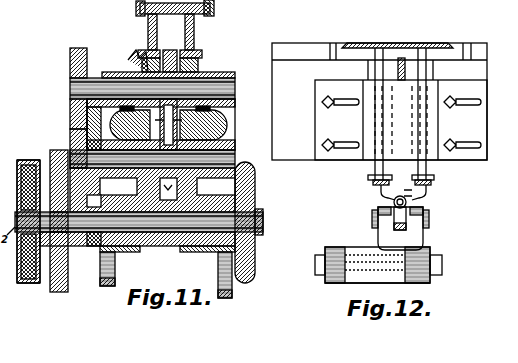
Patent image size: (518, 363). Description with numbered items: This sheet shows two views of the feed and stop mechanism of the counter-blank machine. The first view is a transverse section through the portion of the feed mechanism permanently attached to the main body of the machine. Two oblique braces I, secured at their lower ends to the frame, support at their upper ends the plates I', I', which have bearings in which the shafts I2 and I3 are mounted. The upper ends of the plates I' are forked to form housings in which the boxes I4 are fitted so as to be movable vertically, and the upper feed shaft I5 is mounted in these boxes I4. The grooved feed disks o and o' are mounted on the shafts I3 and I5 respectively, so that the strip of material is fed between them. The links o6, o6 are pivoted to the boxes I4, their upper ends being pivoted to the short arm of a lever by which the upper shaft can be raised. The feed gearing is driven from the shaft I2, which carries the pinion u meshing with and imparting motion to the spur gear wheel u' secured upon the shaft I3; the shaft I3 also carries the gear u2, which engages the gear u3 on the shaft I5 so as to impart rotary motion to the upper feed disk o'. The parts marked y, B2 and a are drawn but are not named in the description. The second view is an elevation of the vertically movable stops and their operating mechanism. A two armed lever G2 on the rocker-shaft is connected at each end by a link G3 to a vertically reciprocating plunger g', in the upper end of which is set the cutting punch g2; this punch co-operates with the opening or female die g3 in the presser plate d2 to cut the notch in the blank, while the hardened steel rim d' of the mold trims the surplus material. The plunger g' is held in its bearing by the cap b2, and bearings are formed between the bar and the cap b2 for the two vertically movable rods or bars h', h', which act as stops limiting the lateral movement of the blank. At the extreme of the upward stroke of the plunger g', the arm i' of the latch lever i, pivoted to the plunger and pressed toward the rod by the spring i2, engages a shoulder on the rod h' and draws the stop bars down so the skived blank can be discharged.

In FIG. 11, the links o6 is at (148, 24).
In FIG. 11, the grooved feed disk o' is at (170, 53).
In FIG. 11, the boxes I4 is at (105, 73).
In FIG. 11, the shaft I5 is at (236, 88).
In FIG. 11, the gear u3 is at (70, 67).
In FIG. 11, the spur gear wheel u' is at (74, 124).
In FIG. 11, the gear u2 is at (70, 143).
In FIG. 11, the rotor lobes y is at (212, 108).
In FIG. 11, the shaft I3 is at (235, 158).
In FIG. 11, the grooved feed disk o is at (167, 196).
In FIG. 11, the shaft I2 is at (264, 220).
In FIG. 11, the plates I' is at (167, 254).
In FIG. 11, the oblique braces I is at (166, 275).
In FIG. 11, the pinion u is at (92, 246).
In FIG. 12, the frame B2 is at (379, 101).
In FIG. 12, the top strip a is at (385, 51).
In FIG. 12, the hardened steel rim d' is at (335, 35).
In FIG. 12, the opening or female die g3 is at (408, 43).
In FIG. 12, the presser plate d2 is at (378, 45).
In FIG. 12, the vertically movable rods or bars h' is at (400, 70).
In FIG. 12, the cutting punch g2 is at (405, 71).
In FIG. 12, the cap b2 is at (401, 120).
In FIG. 12, the arm i' is at (400, 176).
In FIG. 12, the spring i2 is at (385, 195).
In FIG. 12, the latch lever i is at (414, 194).
In FIG. 12, the vertically reciprocating plunger g' is at (400, 205).
In FIG. 12, the link G3 is at (402, 245).
In FIG. 12, the two armed lever G2 is at (345, 284).